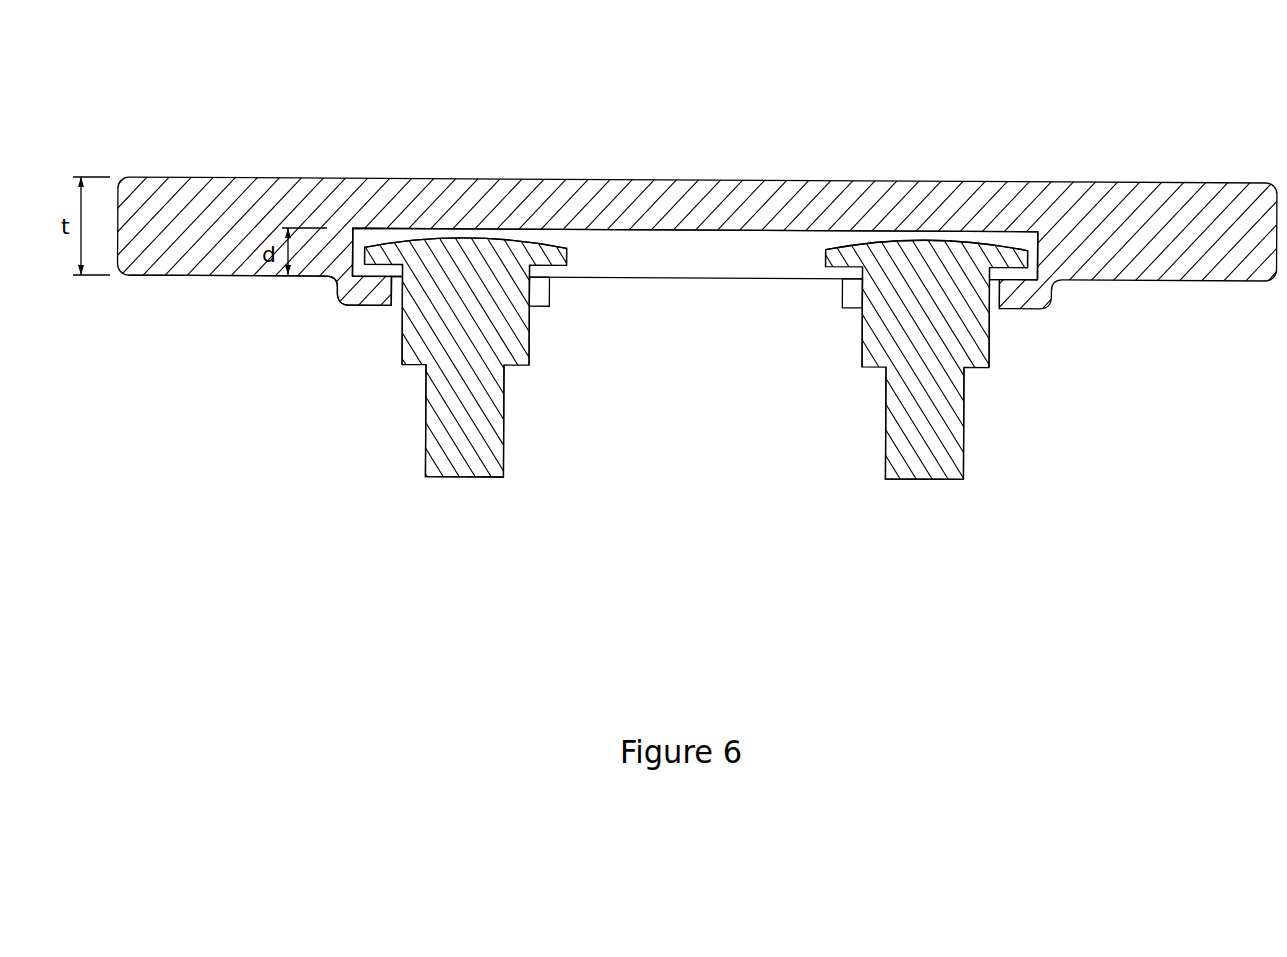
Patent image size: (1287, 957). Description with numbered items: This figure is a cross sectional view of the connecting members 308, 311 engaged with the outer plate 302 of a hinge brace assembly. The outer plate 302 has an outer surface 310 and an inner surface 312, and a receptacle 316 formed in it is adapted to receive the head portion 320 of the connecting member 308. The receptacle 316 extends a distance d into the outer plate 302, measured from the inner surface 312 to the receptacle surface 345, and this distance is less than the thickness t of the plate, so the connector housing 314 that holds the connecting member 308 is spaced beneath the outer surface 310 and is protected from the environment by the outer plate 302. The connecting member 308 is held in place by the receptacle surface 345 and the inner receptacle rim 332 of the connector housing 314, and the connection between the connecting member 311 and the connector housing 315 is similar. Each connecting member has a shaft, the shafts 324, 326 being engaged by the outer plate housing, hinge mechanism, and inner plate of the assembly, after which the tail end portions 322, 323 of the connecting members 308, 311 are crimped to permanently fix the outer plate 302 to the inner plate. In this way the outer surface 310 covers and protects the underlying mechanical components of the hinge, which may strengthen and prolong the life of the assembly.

The outer plate 302 is at (780, 165).
The outer surface 310 is at (527, 179).
The inner surface 312 is at (213, 277).
The head portion 320 is at (352, 257).
The inner receptacle rim 332 is at (358, 306).
The connector housing 314 is at (373, 330).
The connector housing 315 is at (1030, 340).
The connecting member 308 is at (388, 447).
The connecting member 311 is at (846, 452).
The receptacle surface 345 is at (408, 229).
The receptacle 316 is at (376, 237).
The shaft 324 is at (532, 348).
The tail end portion 322 is at (505, 465).
The shaft 326 is at (863, 348).
The tail end portion 323 is at (965, 467).